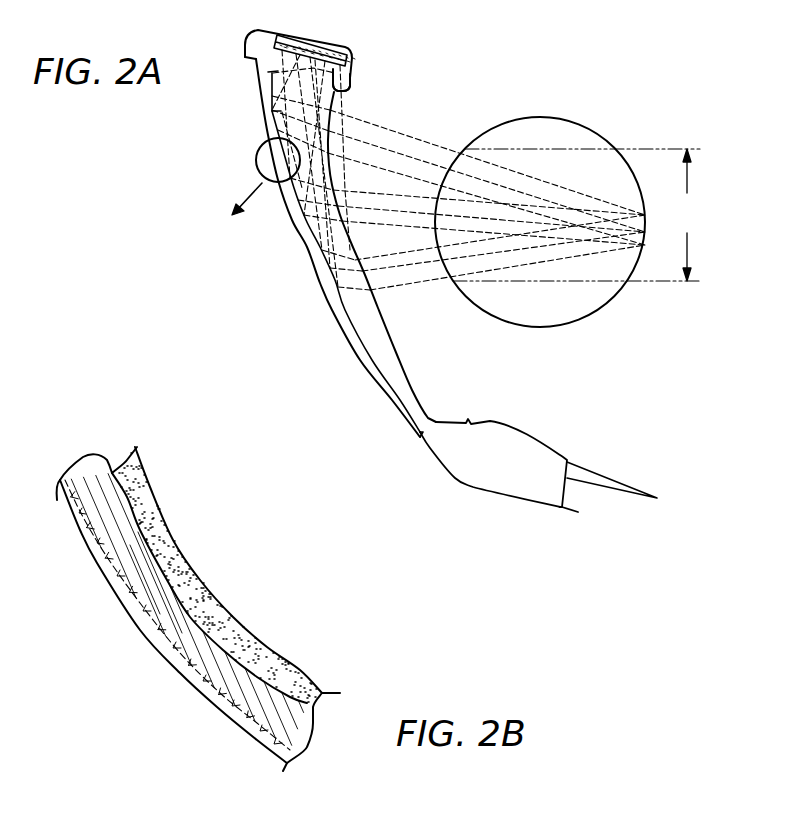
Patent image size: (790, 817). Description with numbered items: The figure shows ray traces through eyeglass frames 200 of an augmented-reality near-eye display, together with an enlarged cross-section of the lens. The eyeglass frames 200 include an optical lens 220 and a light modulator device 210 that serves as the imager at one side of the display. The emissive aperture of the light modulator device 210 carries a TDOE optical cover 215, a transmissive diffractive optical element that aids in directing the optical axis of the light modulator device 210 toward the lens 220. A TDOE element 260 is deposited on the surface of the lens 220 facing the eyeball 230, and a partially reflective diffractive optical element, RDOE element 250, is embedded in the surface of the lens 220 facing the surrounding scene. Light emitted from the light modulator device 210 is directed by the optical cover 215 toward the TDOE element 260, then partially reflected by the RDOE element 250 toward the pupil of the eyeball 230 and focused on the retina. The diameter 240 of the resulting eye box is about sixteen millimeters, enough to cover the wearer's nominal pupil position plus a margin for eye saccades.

In FIG. 2A, the eyeglass frames 200 is at (328, 402).
In FIG. 2A, the light modulator device 210 is at (343, 60).
In FIG. 2A, the TDOE optical cover 215 is at (344, 91).
In FIG. 2B, the optical lens 220 is at (72, 462).
In FIG. 2A, the eyeball 230 is at (583, 125).
In FIG. 2A, the diameter of the eye box 240 is at (578, 215).
In FIG. 2B, the reflective diffractive optical element 250 is at (135, 618).
In FIG. 2B, the TDOE element 260 is at (213, 607).